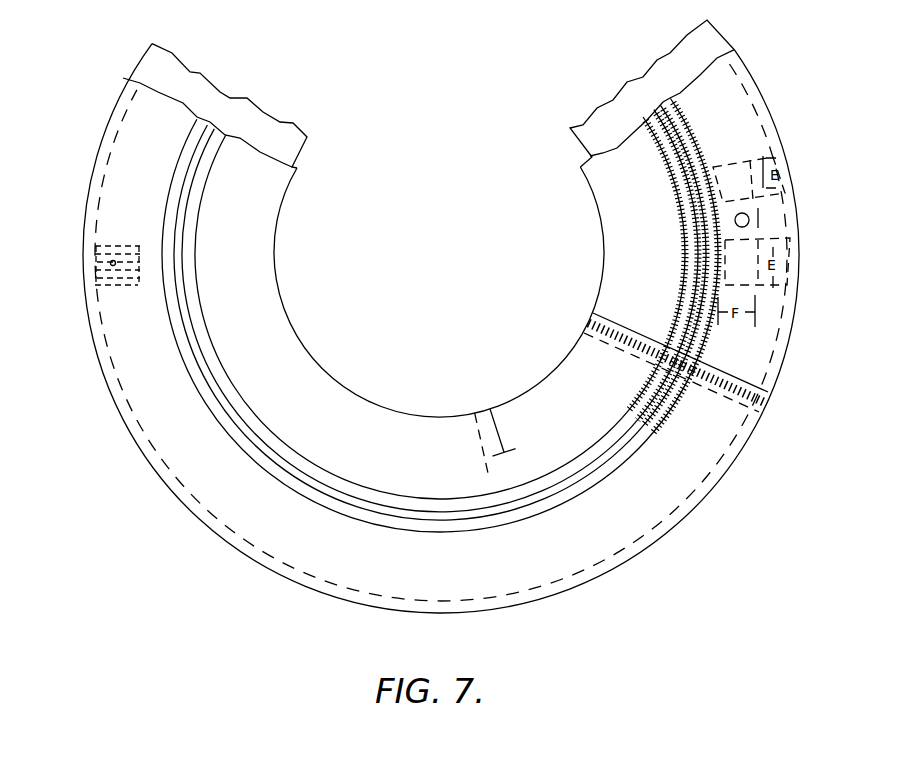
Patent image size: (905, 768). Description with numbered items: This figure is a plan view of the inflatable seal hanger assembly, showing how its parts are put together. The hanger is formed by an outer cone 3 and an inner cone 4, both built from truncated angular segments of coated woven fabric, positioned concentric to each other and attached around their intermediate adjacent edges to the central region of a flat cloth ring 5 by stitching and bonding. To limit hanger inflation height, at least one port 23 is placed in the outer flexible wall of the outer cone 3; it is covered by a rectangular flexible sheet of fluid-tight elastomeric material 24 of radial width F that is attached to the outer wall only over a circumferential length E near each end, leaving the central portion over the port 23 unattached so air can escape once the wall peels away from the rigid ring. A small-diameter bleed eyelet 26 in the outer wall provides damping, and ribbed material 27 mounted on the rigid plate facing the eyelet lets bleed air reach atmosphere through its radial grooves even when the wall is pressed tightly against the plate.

The outer cone 3 is at (777, 117).
The inner cone 4 is at (590, 192).
The flat cloth ring 5 is at (648, 72).
The port 23 is at (756, 220).
The flexible sheet of fluid-tight elastomeric material 24 is at (760, 212).
The bleed eyelet 26 is at (113, 263).
The ribbed material 27 is at (117, 244).